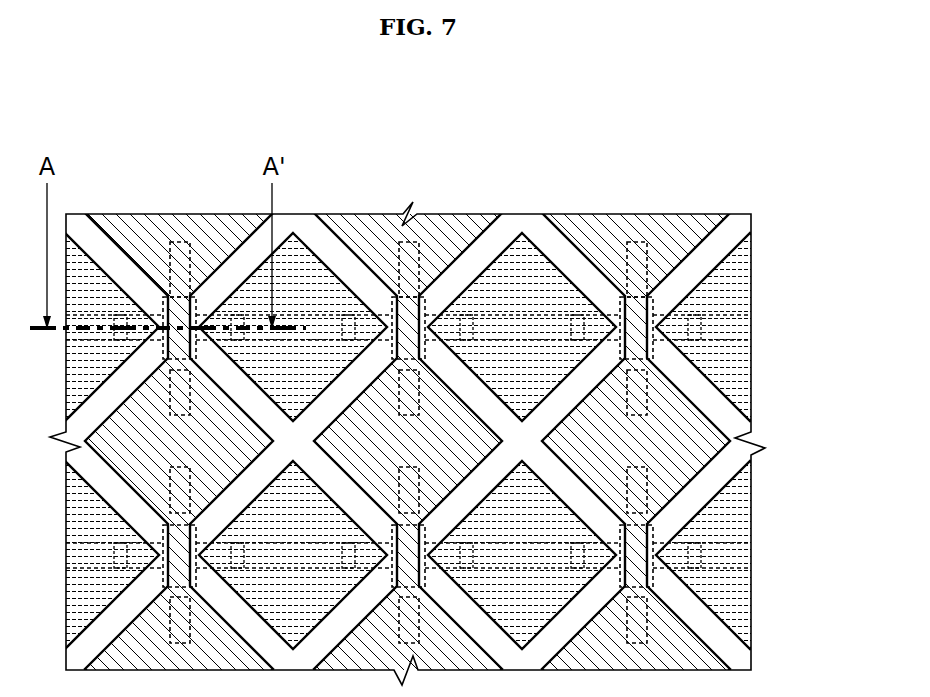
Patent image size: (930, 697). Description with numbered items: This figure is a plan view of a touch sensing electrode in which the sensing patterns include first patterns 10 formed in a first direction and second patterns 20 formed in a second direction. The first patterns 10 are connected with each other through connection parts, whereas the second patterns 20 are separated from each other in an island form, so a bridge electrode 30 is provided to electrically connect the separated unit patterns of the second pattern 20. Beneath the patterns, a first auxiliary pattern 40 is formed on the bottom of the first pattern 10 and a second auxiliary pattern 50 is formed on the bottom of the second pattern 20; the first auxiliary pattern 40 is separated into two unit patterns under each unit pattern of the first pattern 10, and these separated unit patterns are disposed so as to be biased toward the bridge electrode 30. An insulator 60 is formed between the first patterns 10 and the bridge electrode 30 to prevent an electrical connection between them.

The first pattern 10 is at (676, 233).
The second pattern 20 is at (532, 262).
The bridge electrode 30 is at (746, 357).
The first auxiliary pattern 40 is at (403, 238).
The second auxiliary pattern 50 is at (505, 326).
The insulator 60 is at (620, 300).